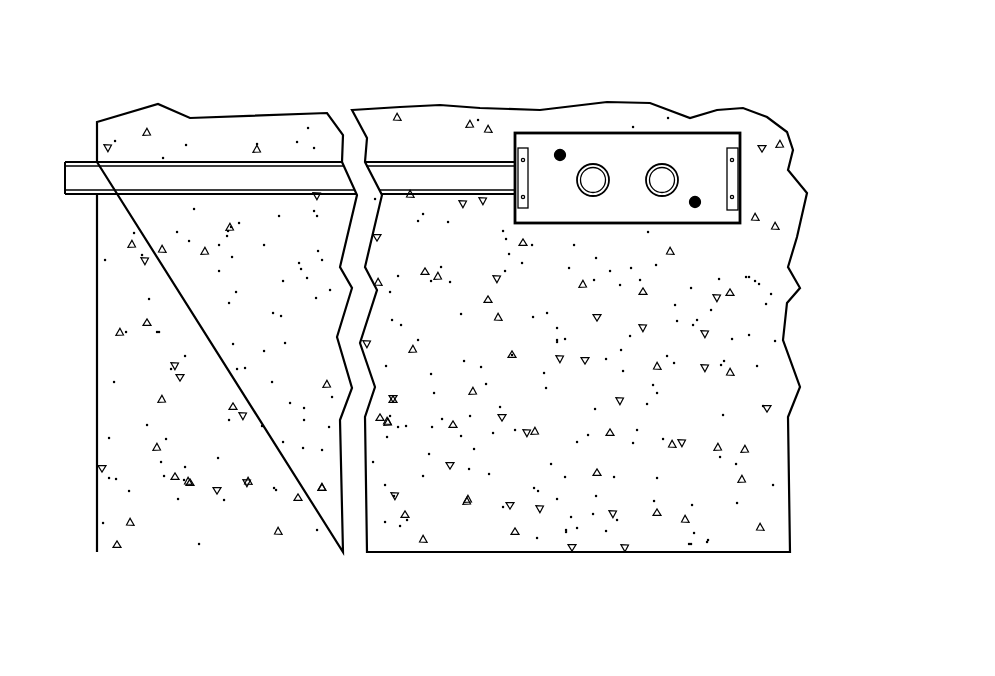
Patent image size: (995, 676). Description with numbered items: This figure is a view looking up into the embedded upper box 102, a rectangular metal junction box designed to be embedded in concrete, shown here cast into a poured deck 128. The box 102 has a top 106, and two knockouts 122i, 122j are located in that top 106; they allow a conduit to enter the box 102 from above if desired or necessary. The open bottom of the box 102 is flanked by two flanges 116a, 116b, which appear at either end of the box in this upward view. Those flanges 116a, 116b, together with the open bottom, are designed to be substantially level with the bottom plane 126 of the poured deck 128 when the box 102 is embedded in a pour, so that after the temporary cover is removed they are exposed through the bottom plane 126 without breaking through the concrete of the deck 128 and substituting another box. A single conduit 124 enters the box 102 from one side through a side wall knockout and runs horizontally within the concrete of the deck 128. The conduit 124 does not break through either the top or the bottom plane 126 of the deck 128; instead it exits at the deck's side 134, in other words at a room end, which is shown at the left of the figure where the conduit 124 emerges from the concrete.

The upper box 102 is at (616, 124).
The top 106 is at (612, 212).
The flange 116a is at (522, 177).
The flange 116b is at (737, 177).
The knockout 122i is at (592, 182).
The knockout 122j is at (665, 182).
The conduit 124 is at (215, 178).
The bottom plane 126 is at (230, 517).
The poured deck 128 is at (226, 327).
The side of the deck 134 is at (78, 361).